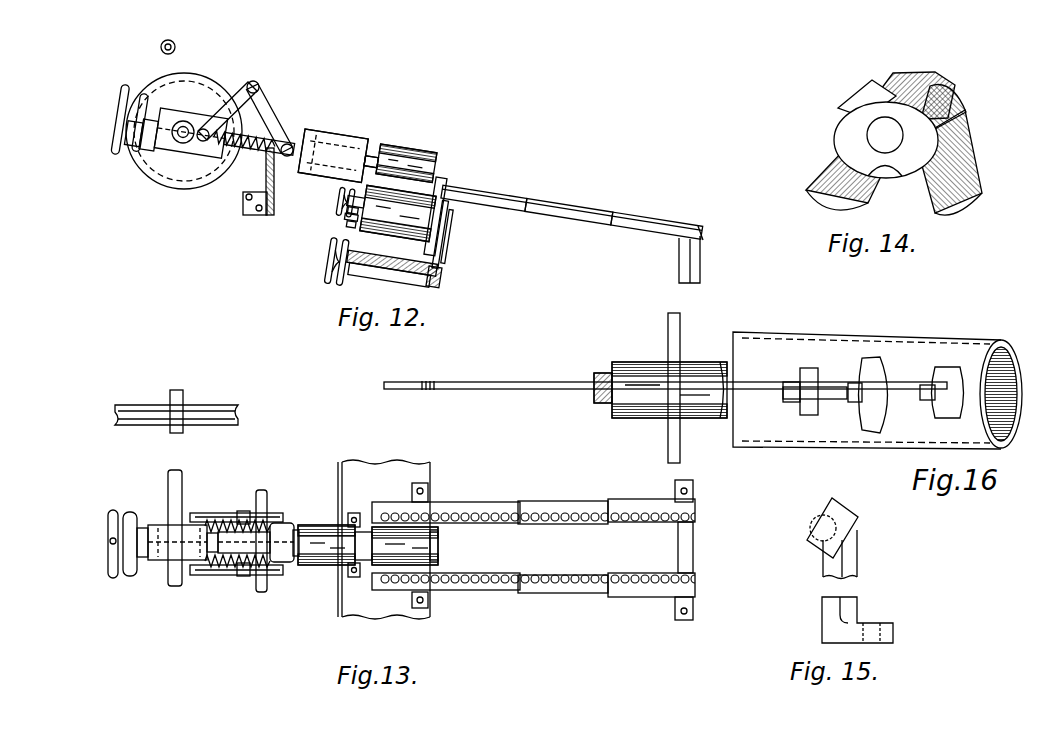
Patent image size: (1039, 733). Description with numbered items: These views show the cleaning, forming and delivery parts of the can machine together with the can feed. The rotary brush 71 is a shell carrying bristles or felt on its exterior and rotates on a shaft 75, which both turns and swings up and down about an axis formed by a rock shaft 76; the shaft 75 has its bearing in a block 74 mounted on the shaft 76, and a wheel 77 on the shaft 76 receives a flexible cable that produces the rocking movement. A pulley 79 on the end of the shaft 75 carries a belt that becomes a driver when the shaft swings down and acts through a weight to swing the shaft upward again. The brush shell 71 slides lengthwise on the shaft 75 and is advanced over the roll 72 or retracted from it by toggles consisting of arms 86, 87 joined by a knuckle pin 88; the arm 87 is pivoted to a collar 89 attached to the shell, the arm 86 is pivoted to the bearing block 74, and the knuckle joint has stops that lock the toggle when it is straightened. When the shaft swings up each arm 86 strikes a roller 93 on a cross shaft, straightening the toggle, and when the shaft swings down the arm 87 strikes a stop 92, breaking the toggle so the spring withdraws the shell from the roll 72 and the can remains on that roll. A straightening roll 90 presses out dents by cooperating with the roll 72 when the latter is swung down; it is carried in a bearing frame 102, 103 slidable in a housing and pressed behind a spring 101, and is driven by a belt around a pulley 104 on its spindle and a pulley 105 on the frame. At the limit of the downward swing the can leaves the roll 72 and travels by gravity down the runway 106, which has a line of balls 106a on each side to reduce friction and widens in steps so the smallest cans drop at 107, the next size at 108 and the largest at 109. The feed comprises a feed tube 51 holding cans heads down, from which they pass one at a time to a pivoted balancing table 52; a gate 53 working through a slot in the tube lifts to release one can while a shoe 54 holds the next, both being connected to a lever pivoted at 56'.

In FIG. 16, the feed tube 51 is at (862, 344).
In FIG. 16, the balancing table 52 is at (645, 352).
In FIG. 16, the gate 53 is at (806, 372).
In FIG. 16, the shoe 54 is at (943, 380).
In FIG. 16, the pivot 56' is at (885, 395).
In FIG. 12, the rotary brush 71 is at (355, 138).
In FIG. 13, the rotary brush 71 is at (296, 525).
In FIG. 12, the roll 72 is at (436, 163).
In FIG. 13, the roll 72 is at (440, 545).
In FIG. 12, the bearing block 74 is at (178, 141).
In FIG. 13, the bearing block 74 is at (148, 555).
In FIG. 12, the shaft 75 is at (383, 150).
In FIG. 13, the shaft 75 is at (298, 528).
In FIG. 12, the rock shaft 76 is at (180, 135).
In FIG. 13, the rock shaft 76 is at (175, 588).
In FIG. 12, the wheel 77 is at (162, 188).
In FIG. 12, the pulley 79 is at (122, 152).
In FIG. 13, the pulley 79 is at (240, 418).
In FIG. 12, the toggle arm 86 is at (228, 100).
In FIG. 14, the toggle arm 86 is at (812, 174).
In FIG. 13, the toggle arm 86 is at (208, 514).
In FIG. 12, the toggle arm 87 is at (268, 110).
In FIG. 14, the toggle arm 87 is at (968, 175).
In FIG. 13, the toggle arm 87 is at (262, 510).
In FIG. 12, the knuckle pin 88 is at (259, 85).
In FIG. 14, the knuckle pin 88 is at (891, 146).
In FIG. 13, the knuckle pin 88 is at (241, 511).
In FIG. 12, the collar 89 is at (303, 131).
In FIG. 12, the straightening roll 90 is at (350, 216).
In FIG. 13, the straightening roll 90 is at (357, 575).
In FIG. 12, the stop 92 is at (268, 214).
In FIG. 13, the stop 92 is at (270, 595).
In FIG. 12, the roller 93 is at (177, 47).
In FIG. 12, the spring 101 is at (365, 268).
In FIG. 12, the bearing frame 102 is at (352, 225).
In FIG. 12, the bearing frame 103 is at (447, 232).
In FIG. 12, the pulley 104 is at (338, 192).
In FIG. 13, the pulley 104 is at (326, 521).
In FIG. 12, the pulley 105 is at (325, 266).
In FIG. 12, the runway 106 is at (383, 193).
In FIG. 13, the runway 106 is at (393, 500).
In FIG. 13, the balls 106a is at (448, 517).
In FIG. 15, the balls 106a is at (812, 522).
In FIG. 12, the runway section 107 is at (447, 207).
In FIG. 13, the runway section 107 is at (472, 502).
In FIG. 12, the runway section 108 is at (527, 221).
In FIG. 13, the runway section 108 is at (563, 502).
In FIG. 12, the runway section 109 is at (606, 232).
In FIG. 13, the runway section 109 is at (647, 499).